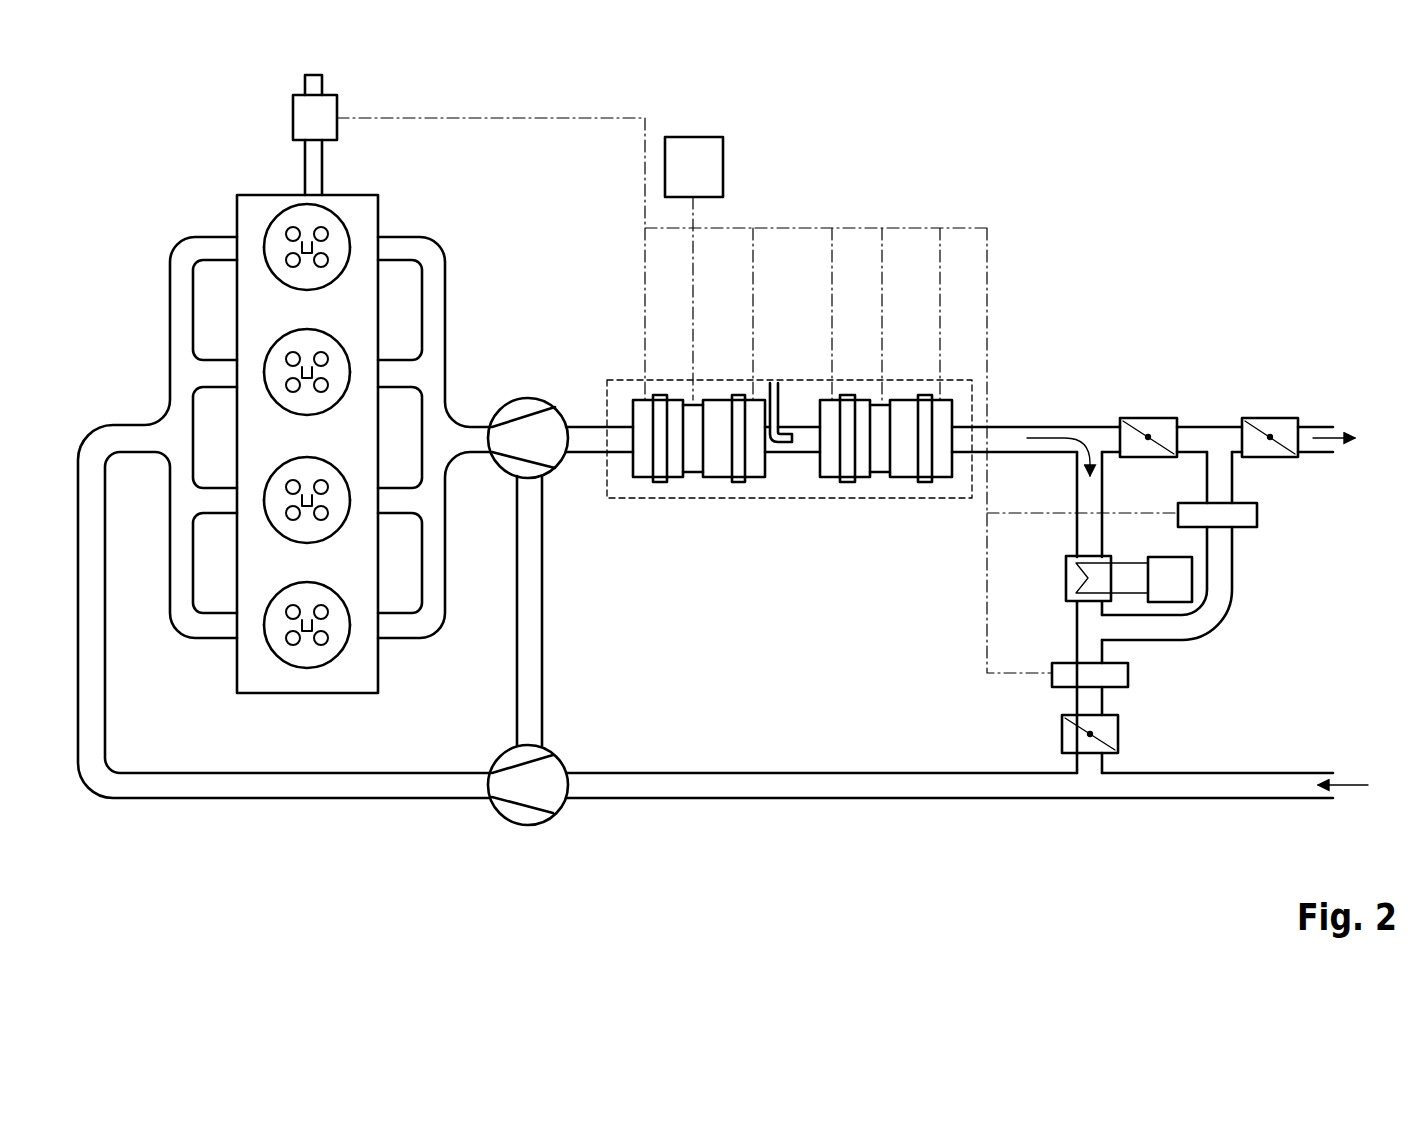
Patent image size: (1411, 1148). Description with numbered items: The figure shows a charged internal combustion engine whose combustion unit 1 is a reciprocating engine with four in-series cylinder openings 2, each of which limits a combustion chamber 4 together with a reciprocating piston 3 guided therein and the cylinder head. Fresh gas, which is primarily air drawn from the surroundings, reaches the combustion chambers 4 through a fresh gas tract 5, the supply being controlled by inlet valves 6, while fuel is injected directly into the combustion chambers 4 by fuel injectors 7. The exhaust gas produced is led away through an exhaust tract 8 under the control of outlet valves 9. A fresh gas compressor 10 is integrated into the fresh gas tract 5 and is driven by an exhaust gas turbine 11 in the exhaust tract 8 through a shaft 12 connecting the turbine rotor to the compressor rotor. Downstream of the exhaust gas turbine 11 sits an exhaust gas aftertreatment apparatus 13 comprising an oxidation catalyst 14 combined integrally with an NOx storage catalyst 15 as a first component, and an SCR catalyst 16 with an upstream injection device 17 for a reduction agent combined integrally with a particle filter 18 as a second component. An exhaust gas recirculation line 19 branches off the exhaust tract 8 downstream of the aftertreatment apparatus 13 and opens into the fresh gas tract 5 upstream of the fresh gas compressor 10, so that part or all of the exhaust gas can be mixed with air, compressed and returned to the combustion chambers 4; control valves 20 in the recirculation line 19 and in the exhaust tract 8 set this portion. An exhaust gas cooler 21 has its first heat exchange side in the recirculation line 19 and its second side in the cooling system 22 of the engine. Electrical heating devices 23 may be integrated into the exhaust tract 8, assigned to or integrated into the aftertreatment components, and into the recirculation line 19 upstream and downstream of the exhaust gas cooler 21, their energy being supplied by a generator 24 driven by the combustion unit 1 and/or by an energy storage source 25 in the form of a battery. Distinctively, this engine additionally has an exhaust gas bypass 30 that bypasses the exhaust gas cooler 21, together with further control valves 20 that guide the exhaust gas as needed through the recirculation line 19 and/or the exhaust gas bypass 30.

The combustion unit 1 is at (416, 146).
The cylinder openings 2 is at (378, 437).
The reciprocating pistons 3 is at (298, 277).
The combustion chamber 4 is at (340, 199).
The fresh gas tract 5 is at (745, 817).
The inlet valves 6 is at (285, 260).
The fuel injectors 7 is at (305, 242).
The exhaust tract 8 is at (1040, 378).
The outlet valves 9 is at (329, 260).
The fresh gas compressor 10 is at (532, 827).
The exhaust gas turbine 11 is at (528, 397).
The shaft 12 is at (546, 612).
The exhaust gas aftertreatment apparatus 13 is at (622, 380).
The oxidation catalyst 14 is at (699, 479).
The NOx storage catalyst 15 is at (675, 468).
The SCR catalyst 16 is at (886, 480).
The injection device 17 is at (773, 383).
The particle filter 18 is at (858, 470).
The exhaust gas recirculation line 19 is at (1066, 534).
The control valves 20 is at (1155, 418).
The exhaust gas cooler 21 is at (1062, 583).
The cooling system 22 is at (1195, 577).
The electrical heating devices 23 is at (645, 467).
The generator 24 is at (308, 118).
The energy storage source 25 is at (710, 167).
The exhaust gas bypass 30 is at (1247, 550).